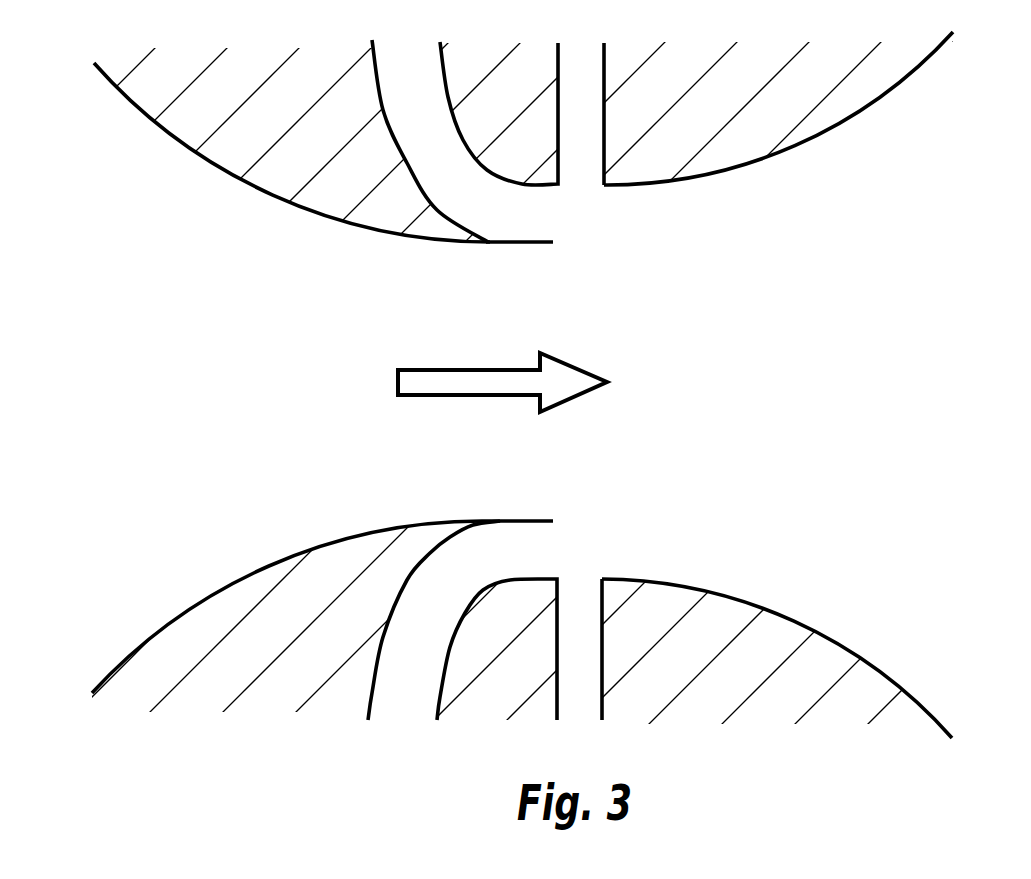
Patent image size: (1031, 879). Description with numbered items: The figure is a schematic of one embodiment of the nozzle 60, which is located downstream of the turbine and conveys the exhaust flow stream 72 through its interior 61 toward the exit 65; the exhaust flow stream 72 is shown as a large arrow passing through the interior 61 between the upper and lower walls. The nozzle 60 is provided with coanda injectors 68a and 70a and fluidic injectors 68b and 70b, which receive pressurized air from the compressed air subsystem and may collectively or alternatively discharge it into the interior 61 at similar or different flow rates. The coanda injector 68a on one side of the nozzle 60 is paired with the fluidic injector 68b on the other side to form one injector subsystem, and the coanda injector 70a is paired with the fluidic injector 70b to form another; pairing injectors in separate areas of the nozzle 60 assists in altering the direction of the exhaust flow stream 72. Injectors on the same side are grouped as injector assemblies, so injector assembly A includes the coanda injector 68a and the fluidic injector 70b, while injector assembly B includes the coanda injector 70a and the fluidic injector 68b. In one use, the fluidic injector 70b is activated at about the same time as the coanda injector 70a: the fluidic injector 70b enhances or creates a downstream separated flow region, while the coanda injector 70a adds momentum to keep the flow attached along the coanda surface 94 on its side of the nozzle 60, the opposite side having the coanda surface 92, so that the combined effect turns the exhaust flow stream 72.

The nozzle 60 is at (176, 139).
The interior 61 is at (221, 403).
The exit 65 is at (1011, 311).
The coanda injector 68a is at (503, 547).
The fluidic injector 68b is at (580, 170).
The coanda injector 70a is at (535, 213).
The fluidic injector 70b is at (578, 597).
The exhaust flow stream 72 is at (477, 370).
The coanda surface 92 is at (802, 621).
The coanda surface 94 is at (845, 122).
The injector assembly A is at (662, 462).
The injector assembly B is at (630, 292).